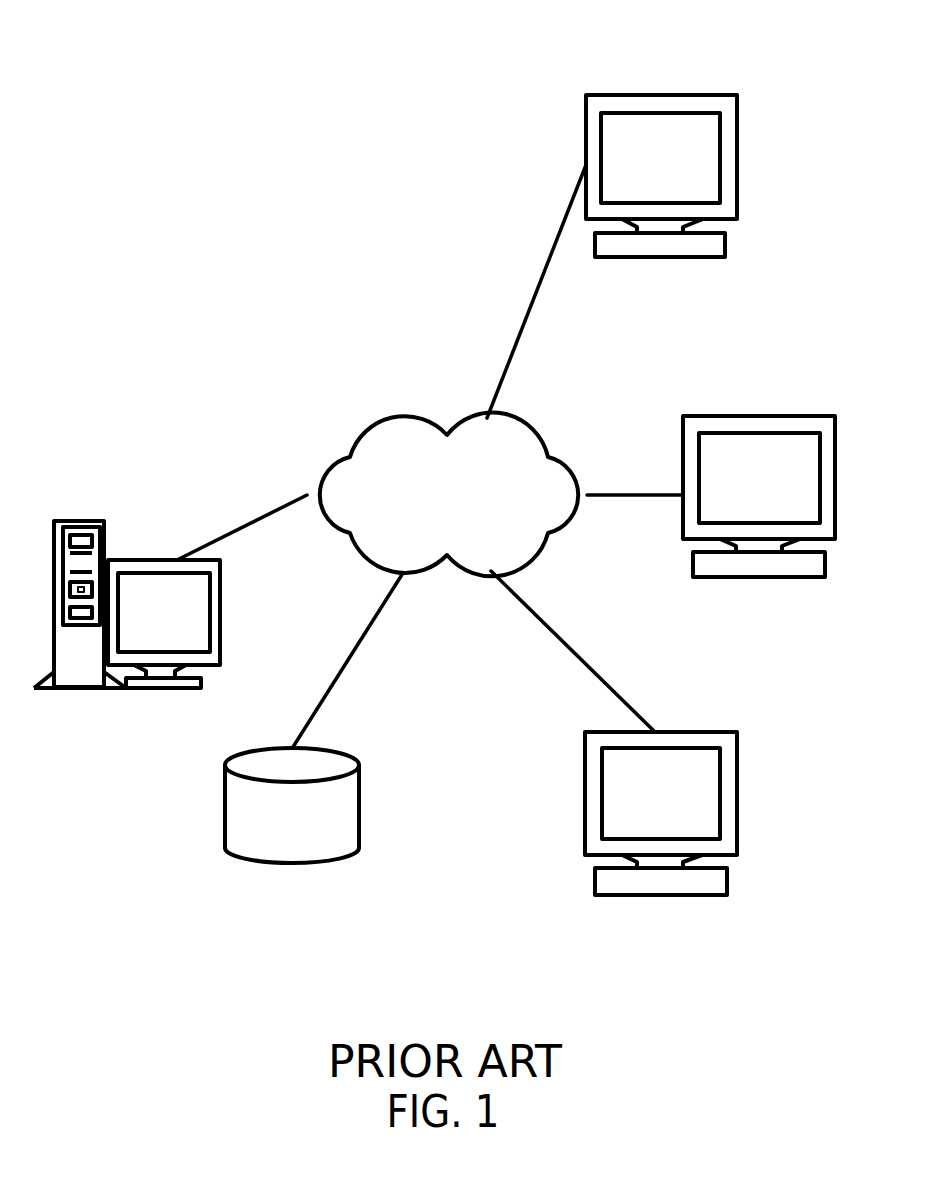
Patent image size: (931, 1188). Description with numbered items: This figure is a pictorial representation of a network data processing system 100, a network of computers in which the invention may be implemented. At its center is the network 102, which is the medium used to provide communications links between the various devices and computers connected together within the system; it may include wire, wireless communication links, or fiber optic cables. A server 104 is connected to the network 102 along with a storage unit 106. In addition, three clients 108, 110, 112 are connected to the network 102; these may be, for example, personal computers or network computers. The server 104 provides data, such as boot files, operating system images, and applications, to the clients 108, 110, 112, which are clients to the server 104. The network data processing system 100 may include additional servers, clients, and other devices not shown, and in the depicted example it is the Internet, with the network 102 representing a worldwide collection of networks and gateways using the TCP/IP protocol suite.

The network data processing system 100 is at (489, 814).
The network 102 is at (397, 428).
The server 104 is at (135, 572).
The storage unit 106 is at (268, 845).
The client 108 is at (636, 106).
The client 110 is at (735, 423).
The client 112 is at (710, 883).